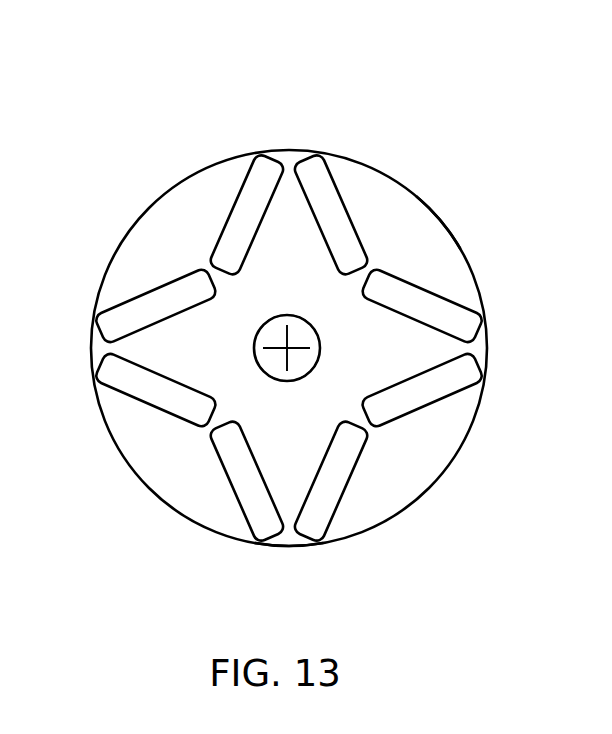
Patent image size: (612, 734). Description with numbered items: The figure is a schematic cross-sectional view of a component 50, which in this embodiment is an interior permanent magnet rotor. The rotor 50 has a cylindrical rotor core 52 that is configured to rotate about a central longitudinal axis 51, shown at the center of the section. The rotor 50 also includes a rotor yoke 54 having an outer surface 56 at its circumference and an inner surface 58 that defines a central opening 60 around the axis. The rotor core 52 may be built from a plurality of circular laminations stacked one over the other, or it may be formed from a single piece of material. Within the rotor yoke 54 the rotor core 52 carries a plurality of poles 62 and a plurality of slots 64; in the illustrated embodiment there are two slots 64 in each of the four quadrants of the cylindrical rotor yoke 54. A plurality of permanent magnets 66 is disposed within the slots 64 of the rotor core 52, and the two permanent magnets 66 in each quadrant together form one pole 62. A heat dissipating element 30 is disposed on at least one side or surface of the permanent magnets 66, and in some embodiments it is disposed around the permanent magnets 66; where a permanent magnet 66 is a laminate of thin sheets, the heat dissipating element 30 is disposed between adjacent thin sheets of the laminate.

The component 50 is at (221, 79).
The rotor core 52 is at (206, 158).
The rotor yoke 54 is at (347, 173).
The outer surface 56 is at (425, 207).
The inner surface 58 is at (318, 344).
The central opening 60 is at (268, 333).
The central longitudinal axis 51 is at (275, 352).
The heat dissipating element 30 is at (123, 395).
The poles 62 is at (356, 483).
The slots 64 is at (300, 547).
The permanent magnets 66 is at (242, 483).